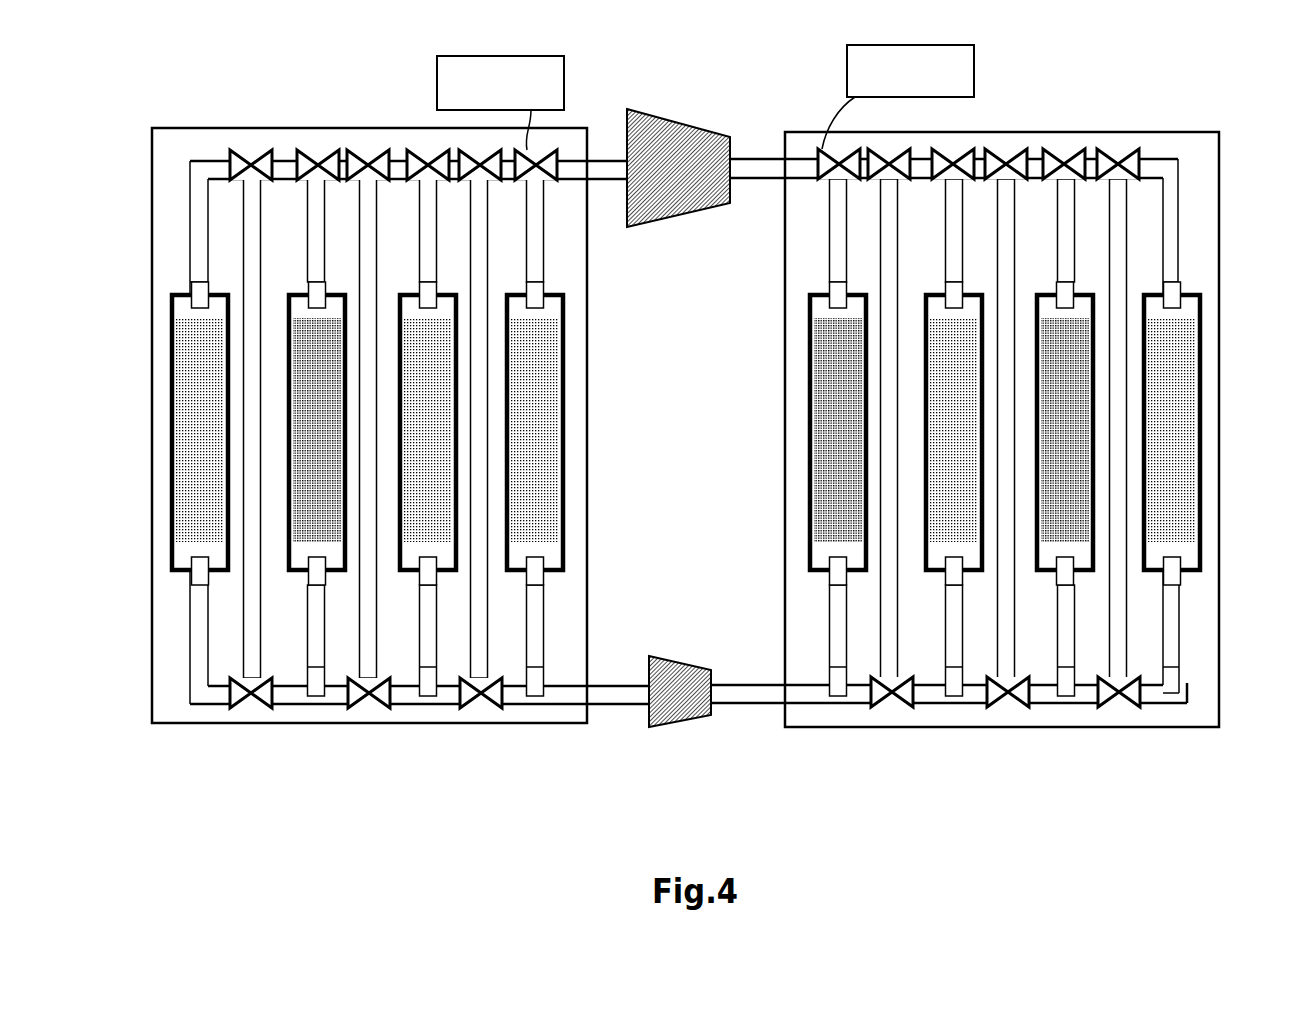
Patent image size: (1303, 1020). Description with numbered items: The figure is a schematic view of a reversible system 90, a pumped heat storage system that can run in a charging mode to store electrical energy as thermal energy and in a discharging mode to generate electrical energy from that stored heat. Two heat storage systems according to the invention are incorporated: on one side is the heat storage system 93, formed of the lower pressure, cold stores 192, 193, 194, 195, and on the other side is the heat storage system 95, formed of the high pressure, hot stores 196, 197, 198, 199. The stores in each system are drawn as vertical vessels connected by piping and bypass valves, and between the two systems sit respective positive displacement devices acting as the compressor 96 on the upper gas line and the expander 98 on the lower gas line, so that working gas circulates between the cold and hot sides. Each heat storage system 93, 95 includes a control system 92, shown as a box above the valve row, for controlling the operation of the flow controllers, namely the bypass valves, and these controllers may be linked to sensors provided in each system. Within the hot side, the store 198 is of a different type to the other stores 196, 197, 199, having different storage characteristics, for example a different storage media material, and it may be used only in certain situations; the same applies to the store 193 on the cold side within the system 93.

The reversible system 90 is at (237, 108).
The control system 92 is at (437, 82).
The heat storage system 93 is at (587, 345).
The heat storage system 95 is at (1218, 162).
The compressor 96 is at (681, 117).
The expander 98 is at (680, 726).
The lower pressure store 192 is at (180, 574).
The lower pressure store 193 is at (303, 574).
The lower pressure store 194 is at (413, 574).
The lower pressure store 195 is at (523, 574).
The high pressure store 196 is at (825, 573).
The high pressure store 197 is at (940, 573).
The high pressure store 198 is at (1052, 573).
The high pressure store 199 is at (1162, 573).